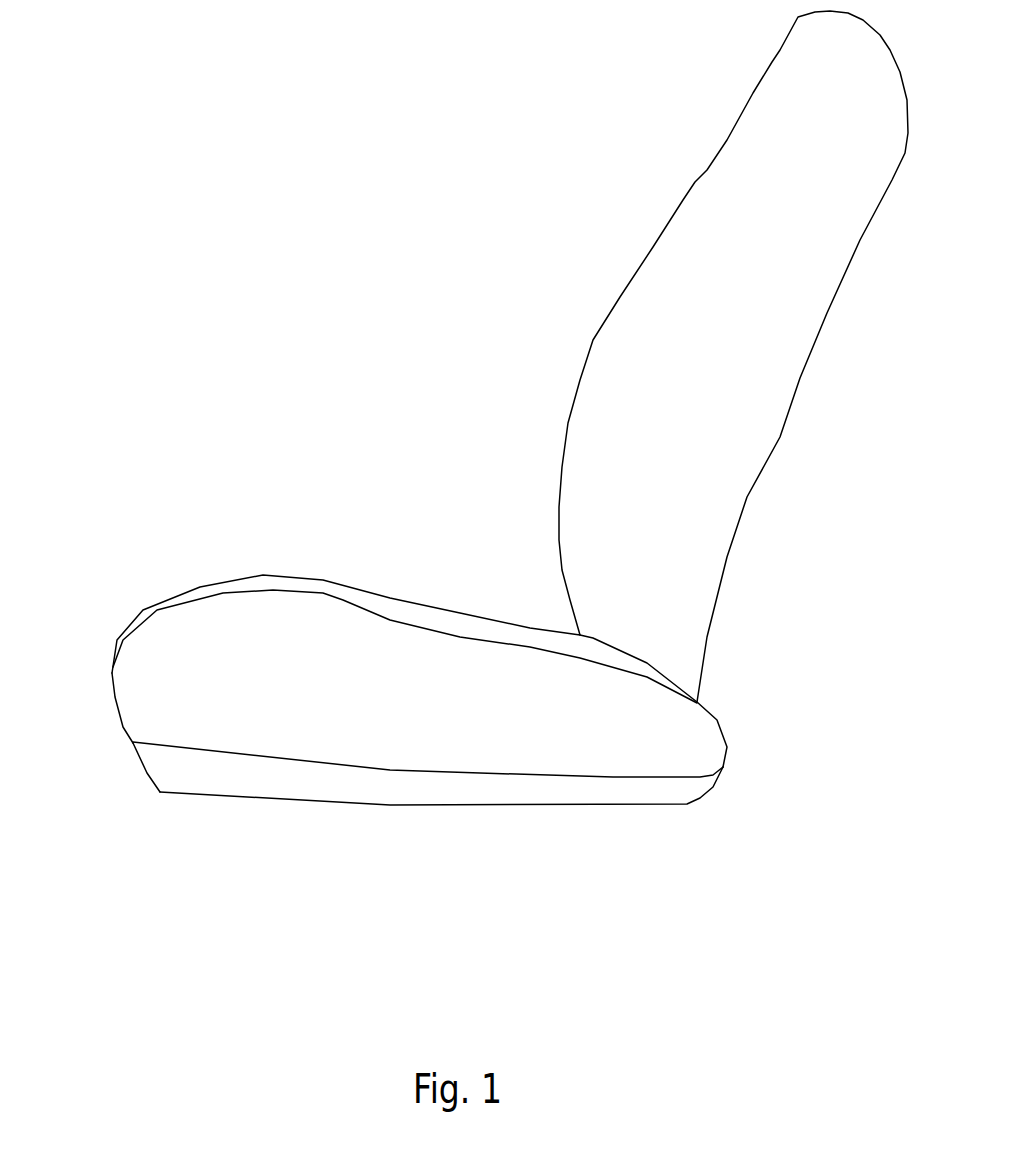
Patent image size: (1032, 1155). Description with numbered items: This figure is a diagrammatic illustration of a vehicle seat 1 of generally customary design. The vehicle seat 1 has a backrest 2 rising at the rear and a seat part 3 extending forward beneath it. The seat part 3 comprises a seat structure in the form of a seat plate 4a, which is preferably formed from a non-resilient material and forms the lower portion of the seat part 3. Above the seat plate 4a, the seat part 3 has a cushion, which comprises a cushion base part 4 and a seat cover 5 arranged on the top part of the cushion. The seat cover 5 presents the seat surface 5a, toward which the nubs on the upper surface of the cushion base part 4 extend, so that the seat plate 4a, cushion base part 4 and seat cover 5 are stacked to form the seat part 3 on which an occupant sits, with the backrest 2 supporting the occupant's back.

The vehicle seat 1 is at (356, 287).
The backrest 2 is at (701, 412).
The seat part 3 is at (112, 700).
The cushion base part 4 is at (152, 715).
The seat plate 4a is at (365, 785).
The seat cover 5 is at (270, 583).
The seat surface 5a is at (472, 618).